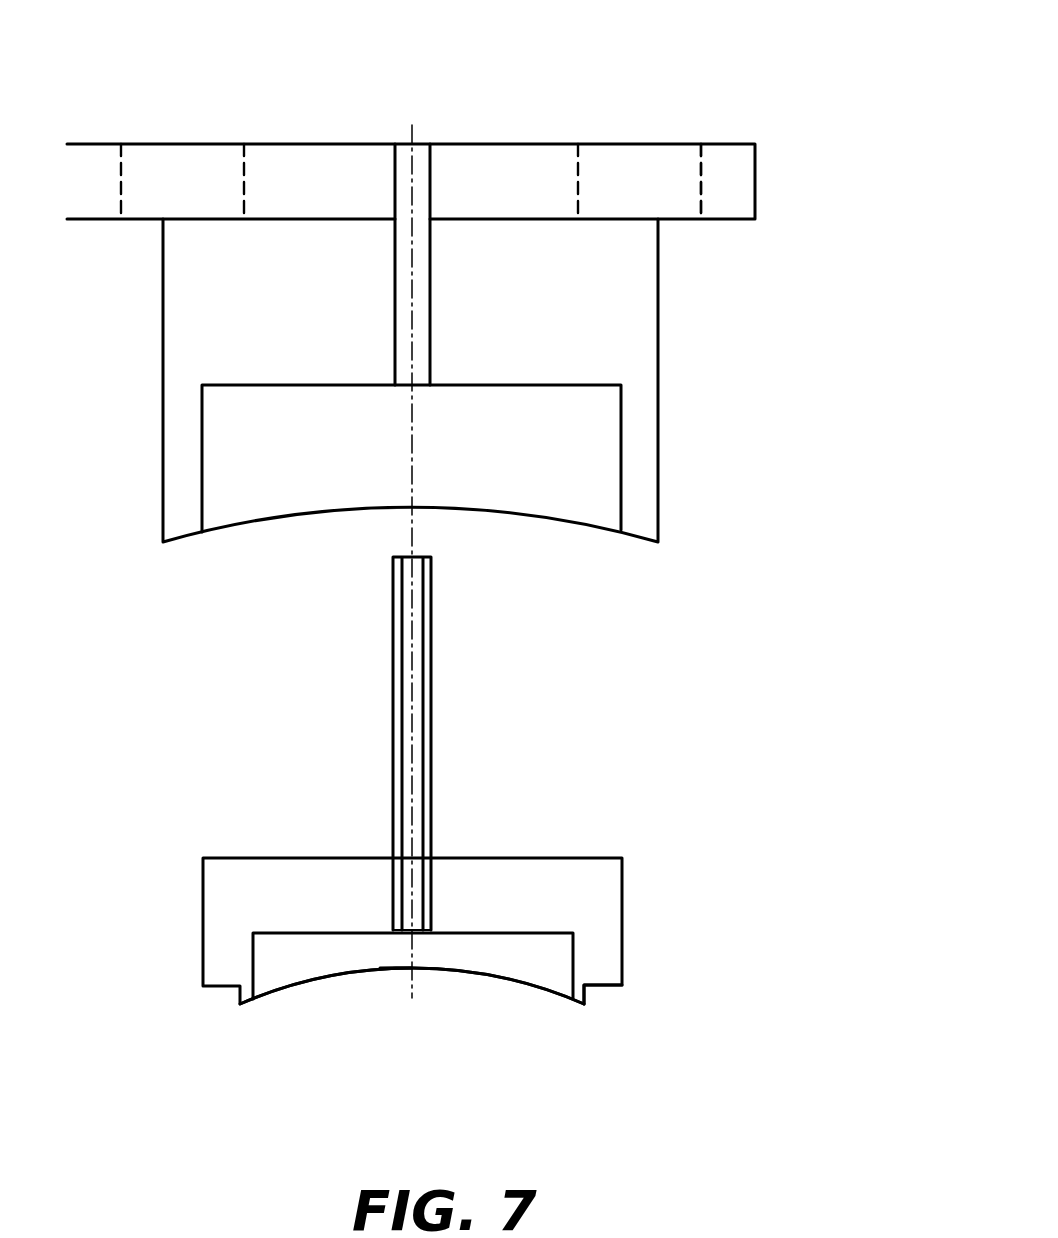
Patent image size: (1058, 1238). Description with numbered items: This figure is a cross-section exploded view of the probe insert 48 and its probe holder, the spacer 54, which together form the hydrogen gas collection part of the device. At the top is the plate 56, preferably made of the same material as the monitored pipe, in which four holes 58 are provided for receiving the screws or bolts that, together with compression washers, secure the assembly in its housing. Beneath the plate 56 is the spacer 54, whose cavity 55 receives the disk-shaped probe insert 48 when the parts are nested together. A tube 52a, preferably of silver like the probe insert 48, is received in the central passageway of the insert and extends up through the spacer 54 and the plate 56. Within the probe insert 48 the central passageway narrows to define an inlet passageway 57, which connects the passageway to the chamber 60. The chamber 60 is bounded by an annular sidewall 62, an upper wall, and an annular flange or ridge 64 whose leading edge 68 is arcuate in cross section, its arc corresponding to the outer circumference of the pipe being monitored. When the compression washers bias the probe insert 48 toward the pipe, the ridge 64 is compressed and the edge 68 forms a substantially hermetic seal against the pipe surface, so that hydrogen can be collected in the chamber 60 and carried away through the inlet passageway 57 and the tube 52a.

The probe insert 48 is at (622, 886).
The tube 52a is at (431, 755).
The probe holder (spacer) 54 is at (658, 318).
The cavity 55 is at (617, 432).
The plate 56 is at (755, 200).
The inlet passageway 57 is at (418, 932).
The holes 58 is at (698, 171).
The chamber 60 is at (523, 967).
The annular sidewall 62 is at (573, 947).
The annular flange or ridge 64 is at (597, 996).
The leading edge 68 is at (398, 968).